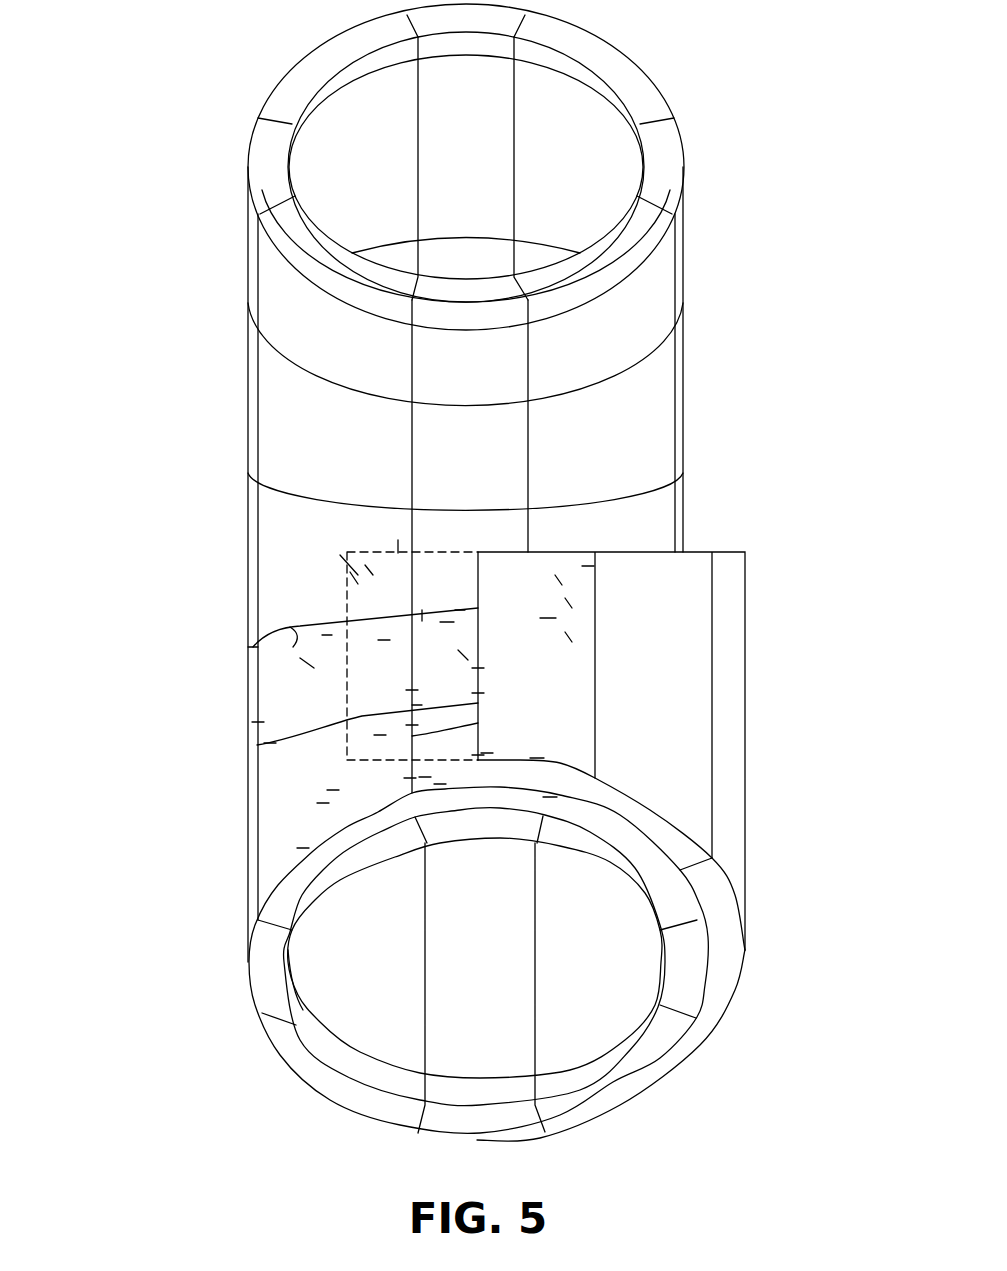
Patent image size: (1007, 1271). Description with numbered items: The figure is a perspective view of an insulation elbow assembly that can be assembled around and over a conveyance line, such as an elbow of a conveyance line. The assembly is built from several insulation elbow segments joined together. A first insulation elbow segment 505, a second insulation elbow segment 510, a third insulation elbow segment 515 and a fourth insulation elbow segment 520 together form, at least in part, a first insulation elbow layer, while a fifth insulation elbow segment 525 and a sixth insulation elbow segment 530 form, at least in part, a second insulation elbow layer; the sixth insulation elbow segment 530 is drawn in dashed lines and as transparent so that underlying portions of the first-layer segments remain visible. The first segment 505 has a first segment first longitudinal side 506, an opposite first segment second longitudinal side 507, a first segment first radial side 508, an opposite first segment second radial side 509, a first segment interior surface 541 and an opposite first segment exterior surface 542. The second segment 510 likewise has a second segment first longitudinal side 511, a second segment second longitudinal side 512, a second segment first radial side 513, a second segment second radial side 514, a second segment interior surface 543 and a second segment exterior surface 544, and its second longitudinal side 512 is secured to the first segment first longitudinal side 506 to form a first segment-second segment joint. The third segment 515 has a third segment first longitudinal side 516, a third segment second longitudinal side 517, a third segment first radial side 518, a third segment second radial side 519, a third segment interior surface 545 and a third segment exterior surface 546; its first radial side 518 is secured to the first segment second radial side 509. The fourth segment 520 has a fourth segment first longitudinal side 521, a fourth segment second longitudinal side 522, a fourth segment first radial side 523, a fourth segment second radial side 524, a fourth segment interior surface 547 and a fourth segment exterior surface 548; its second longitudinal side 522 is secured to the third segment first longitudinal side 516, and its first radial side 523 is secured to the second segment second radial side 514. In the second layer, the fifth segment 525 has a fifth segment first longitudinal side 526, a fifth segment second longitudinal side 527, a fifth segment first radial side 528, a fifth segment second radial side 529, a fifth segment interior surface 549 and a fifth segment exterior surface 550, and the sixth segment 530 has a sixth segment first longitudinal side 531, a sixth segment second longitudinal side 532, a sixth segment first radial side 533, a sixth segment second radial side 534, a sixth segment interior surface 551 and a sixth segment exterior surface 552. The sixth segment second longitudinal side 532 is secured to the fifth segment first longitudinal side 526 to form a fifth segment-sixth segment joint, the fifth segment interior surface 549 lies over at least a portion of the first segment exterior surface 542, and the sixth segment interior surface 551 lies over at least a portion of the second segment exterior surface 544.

The first insulation elbow segment 505 is at (441, 798).
The first segment first longitudinal side 506 is at (478, 725).
The first segment second longitudinal side 507 is at (550, 797).
The first segment first radial side 508 is at (478, 755).
The first segment second radial side 509 is at (478, 693).
The second insulation elbow segment 510 is at (272, 765).
The second segment first longitudinal side 511 is at (258, 882).
The second segment second longitudinal side 512 is at (410, 778).
The second segment first radial side 513 is at (303, 848).
The second segment second radial side 514 is at (266, 823).
The third insulation elbow segment 515 is at (448, 605).
The third segment first longitudinal side 516 is at (412, 670).
The third segment second longitudinal side 517 is at (570, 637).
The third segment first radial side 518 is at (417, 705).
The third segment second radial side 519 is at (460, 610).
The fourth insulation elbow segment 520 is at (275, 697).
The fourth segment first longitudinal side 521 is at (258, 722).
The fourth segment second longitudinal side 522 is at (412, 690).
The fourth segment first radial side 523 is at (270, 743).
The fourth segment second radial side 524 is at (253, 647).
The fifth insulation elbow segment 525 is at (549, 605).
The fifth segment first longitudinal side 526 is at (478, 668).
The fifth segment second longitudinal side 527 is at (597, 667).
The fifth segment first radial side 528 is at (537, 758).
The fifth segment second radial side 529 is at (588, 565).
The sixth insulation elbow segment 530 is at (384, 625).
The sixth segment first longitudinal side 531 is at (358, 578).
The sixth segment second longitudinal side 532 is at (412, 725).
The sixth segment first radial side 533 is at (380, 735).
The sixth segment second radial side 534 is at (398, 553).
The first segment interior surface 541 is at (487, 753).
The first segment exterior surface 542 is at (425, 777).
The second segment interior surface 543 is at (333, 790).
The second segment exterior surface 544 is at (323, 803).
The third segment interior surface 545 is at (463, 655).
The third segment exterior surface 546 is at (422, 621).
The fourth segment interior surface 547 is at (307, 663).
The fourth segment exterior surface 548 is at (327, 635).
The fifth segment interior surface 549 is at (560, 580).
The fifth segment exterior surface 550 is at (570, 603).
The sixth segment interior surface 551 is at (373, 575).
The sixth segment exterior surface 552 is at (358, 574).